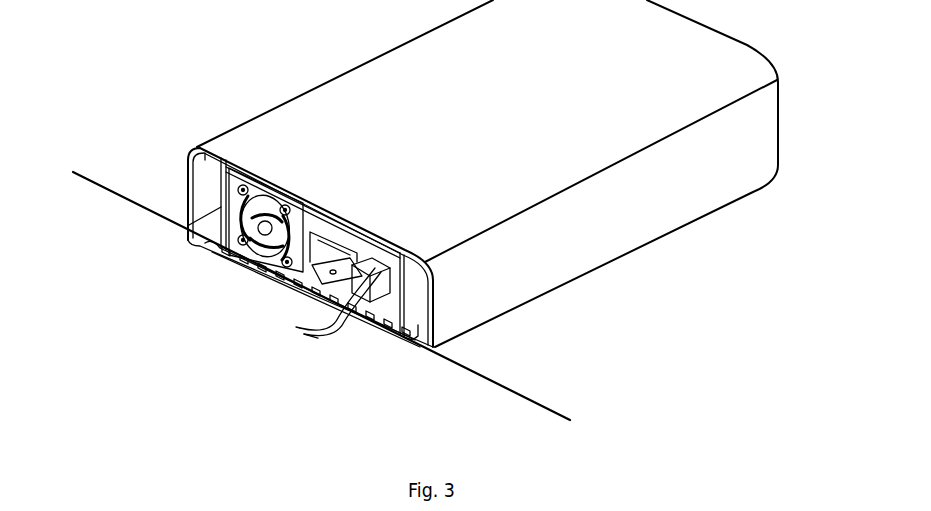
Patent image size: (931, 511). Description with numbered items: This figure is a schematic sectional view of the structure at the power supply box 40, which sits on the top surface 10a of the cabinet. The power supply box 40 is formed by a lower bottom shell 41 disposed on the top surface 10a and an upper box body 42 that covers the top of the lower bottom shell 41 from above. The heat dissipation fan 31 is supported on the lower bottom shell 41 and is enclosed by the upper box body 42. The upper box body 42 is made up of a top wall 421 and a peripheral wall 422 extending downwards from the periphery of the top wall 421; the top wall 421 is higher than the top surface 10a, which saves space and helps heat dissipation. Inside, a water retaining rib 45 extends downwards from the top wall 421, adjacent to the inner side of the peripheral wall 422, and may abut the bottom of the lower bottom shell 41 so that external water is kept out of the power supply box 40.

The top wall 421 is at (398, 58).
The peripheral wall 422 is at (182, 168).
The water retaining rib 45 is at (196, 150).
The upper box body 42 is at (179, 193).
The power supply box 40 is at (263, 240).
The lower bottom shell 41 is at (220, 254).
The heat dissipation fan 31 is at (250, 265).
The top surface of the cabinet 10a is at (522, 368).